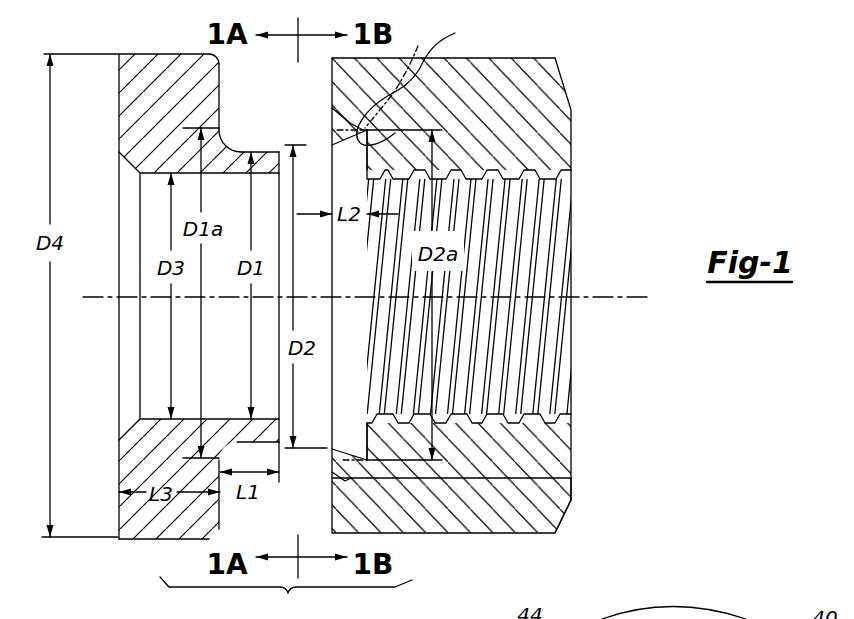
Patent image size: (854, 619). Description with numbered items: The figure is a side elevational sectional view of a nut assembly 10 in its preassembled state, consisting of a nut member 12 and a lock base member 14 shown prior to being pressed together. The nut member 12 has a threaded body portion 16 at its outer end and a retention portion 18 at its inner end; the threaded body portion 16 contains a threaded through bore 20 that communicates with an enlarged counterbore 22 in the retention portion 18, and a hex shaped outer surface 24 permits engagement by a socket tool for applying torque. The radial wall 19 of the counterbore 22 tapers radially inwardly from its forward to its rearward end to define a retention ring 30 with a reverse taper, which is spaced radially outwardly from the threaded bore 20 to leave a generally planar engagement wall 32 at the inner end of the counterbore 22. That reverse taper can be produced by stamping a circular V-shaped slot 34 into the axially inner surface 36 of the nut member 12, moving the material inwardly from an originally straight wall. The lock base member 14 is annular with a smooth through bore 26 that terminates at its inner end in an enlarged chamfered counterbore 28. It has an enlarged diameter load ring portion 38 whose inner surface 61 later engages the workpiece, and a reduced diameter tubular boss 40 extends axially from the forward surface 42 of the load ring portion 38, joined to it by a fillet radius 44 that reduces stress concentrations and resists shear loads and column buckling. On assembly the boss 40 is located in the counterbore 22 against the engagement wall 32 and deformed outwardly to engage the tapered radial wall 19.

The nut assembly 10 is at (286, 598).
The nut member 12 is at (527, 51).
The lock base member 14 is at (136, 52).
The threaded body portion 16 is at (467, 481).
The retention portion 18 is at (345, 478).
The radial wall 19 is at (409, 79).
The threaded through bore 20 is at (528, 413).
The counterbore 22 is at (337, 282).
The hex shaped outer surface 24 is at (500, 57).
The through bore 26 is at (228, 418).
The chamfered counterbore 28 is at (125, 170).
The retention ring 30 is at (362, 462).
The engagement wall 32 is at (366, 441).
The V-shaped slot 34 is at (333, 118).
The axially inner surface 36 is at (332, 519).
The load ring portion 38 is at (139, 100).
The boss 40 is at (258, 150).
The forward surface 42 is at (220, 80).
The fillet radius 44 is at (233, 124).
The inner surface 61 is at (119, 478).